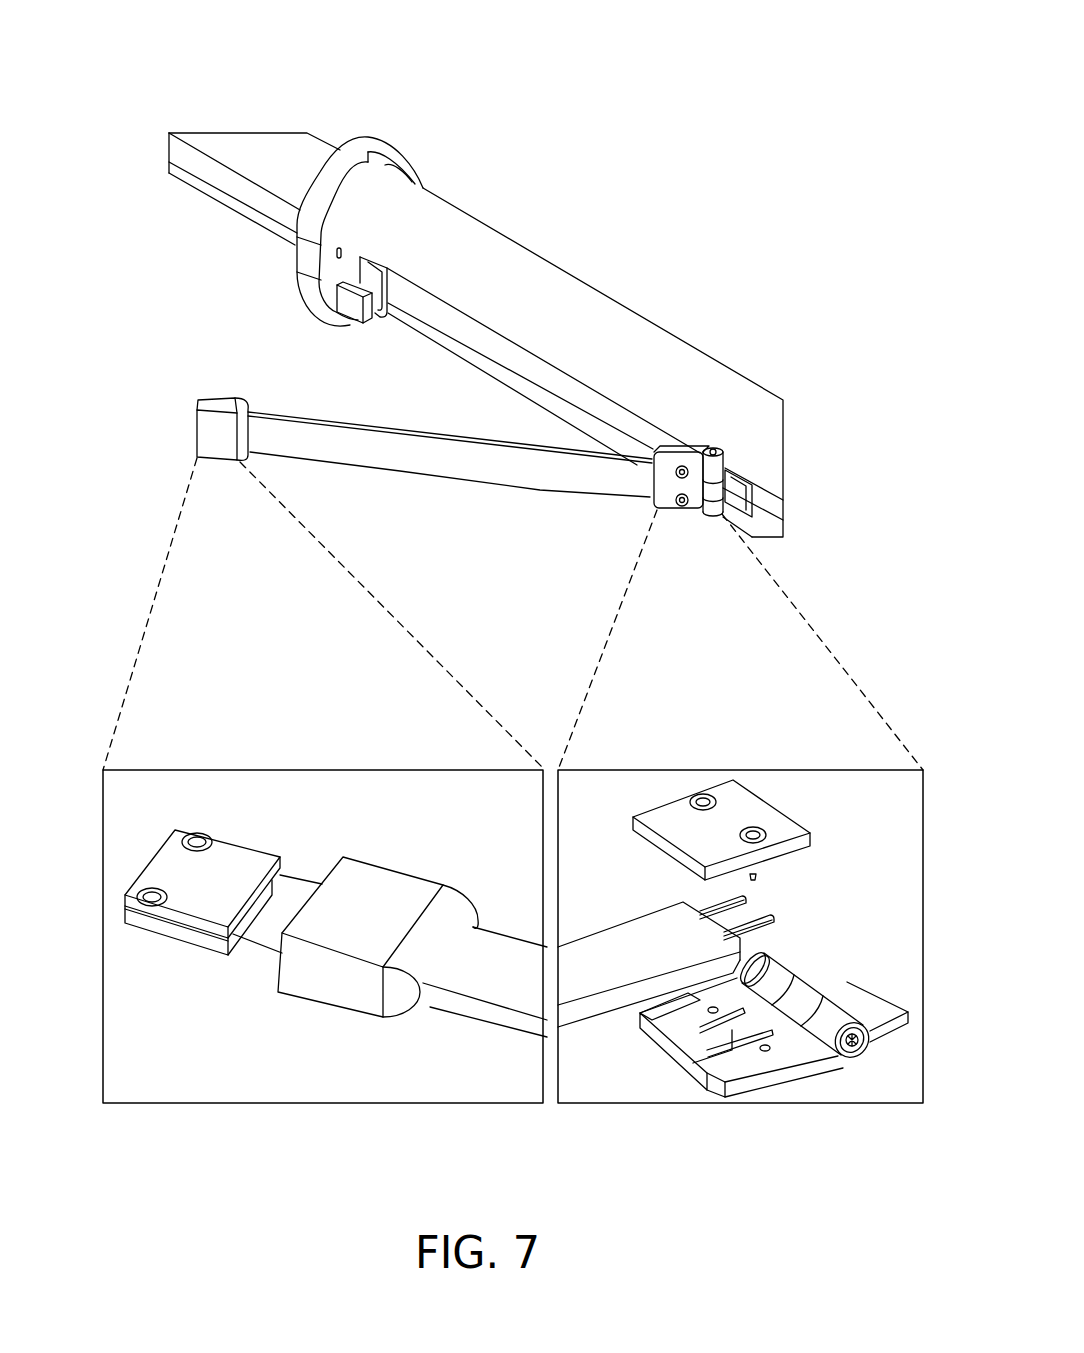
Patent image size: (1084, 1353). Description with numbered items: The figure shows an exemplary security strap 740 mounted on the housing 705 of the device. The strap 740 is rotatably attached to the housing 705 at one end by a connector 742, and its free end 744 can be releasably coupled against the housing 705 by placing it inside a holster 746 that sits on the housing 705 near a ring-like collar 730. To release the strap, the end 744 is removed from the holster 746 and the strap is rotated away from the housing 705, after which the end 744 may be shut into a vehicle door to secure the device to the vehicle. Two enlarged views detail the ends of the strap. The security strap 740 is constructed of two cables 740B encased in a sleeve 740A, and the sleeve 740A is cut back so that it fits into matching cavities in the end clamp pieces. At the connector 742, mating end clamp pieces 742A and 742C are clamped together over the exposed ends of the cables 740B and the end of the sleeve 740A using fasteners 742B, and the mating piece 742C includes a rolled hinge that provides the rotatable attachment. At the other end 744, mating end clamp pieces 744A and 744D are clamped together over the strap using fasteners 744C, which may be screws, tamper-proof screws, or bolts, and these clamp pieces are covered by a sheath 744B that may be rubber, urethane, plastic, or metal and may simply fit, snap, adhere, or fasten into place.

The housing 705 is at (466, 253).
The ring collar 730 is at (347, 160).
The holster 746 is at (343, 320).
The connector 742 is at (680, 447).
The end 744 is at (218, 427).
The security strap 740 is at (556, 465).
The end clamp piece 744A is at (168, 863).
The sheath 744B is at (407, 893).
The fasteners 744C is at (203, 833).
The end clamp piece 744D is at (180, 940).
The end clamp piece 742A is at (670, 803).
The fasteners 742B is at (760, 830).
The mating piece 742C is at (810, 1063).
The sleeve 740A is at (640, 942).
The cables 740B is at (760, 932).